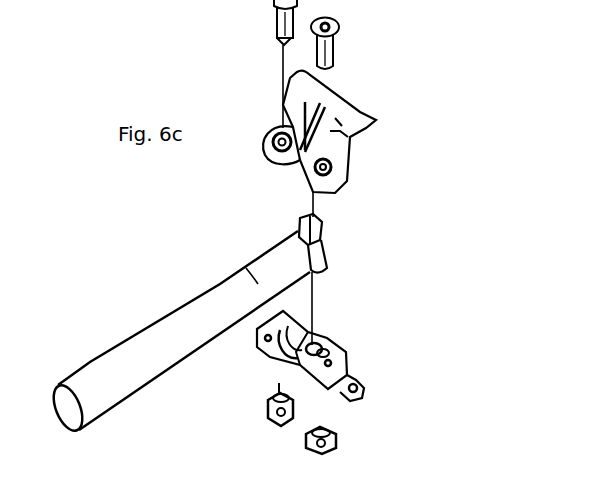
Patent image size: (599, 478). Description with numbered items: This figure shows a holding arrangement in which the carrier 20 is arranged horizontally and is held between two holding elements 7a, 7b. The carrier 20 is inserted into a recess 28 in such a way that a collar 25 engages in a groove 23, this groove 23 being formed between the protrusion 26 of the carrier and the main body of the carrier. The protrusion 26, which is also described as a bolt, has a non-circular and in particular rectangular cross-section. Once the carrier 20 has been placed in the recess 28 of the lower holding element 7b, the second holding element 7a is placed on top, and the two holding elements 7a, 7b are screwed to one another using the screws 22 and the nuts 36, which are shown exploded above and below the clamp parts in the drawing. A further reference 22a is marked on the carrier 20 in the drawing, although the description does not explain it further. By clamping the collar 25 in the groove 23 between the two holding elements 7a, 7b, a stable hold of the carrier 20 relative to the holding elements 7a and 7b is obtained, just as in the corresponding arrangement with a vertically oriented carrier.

The second holding element 7a is at (343, 108).
The holding element 7b is at (364, 388).
The carrier 20 is at (210, 305).
The screw 22 is at (277, 29).
The bolt hole in rail 22a is at (260, 284).
The groove 23 is at (299, 227).
The collar 25 is at (311, 348).
The protrusion 26 is at (327, 226).
The recess 28 is at (278, 358).
The nut 36 is at (337, 445).